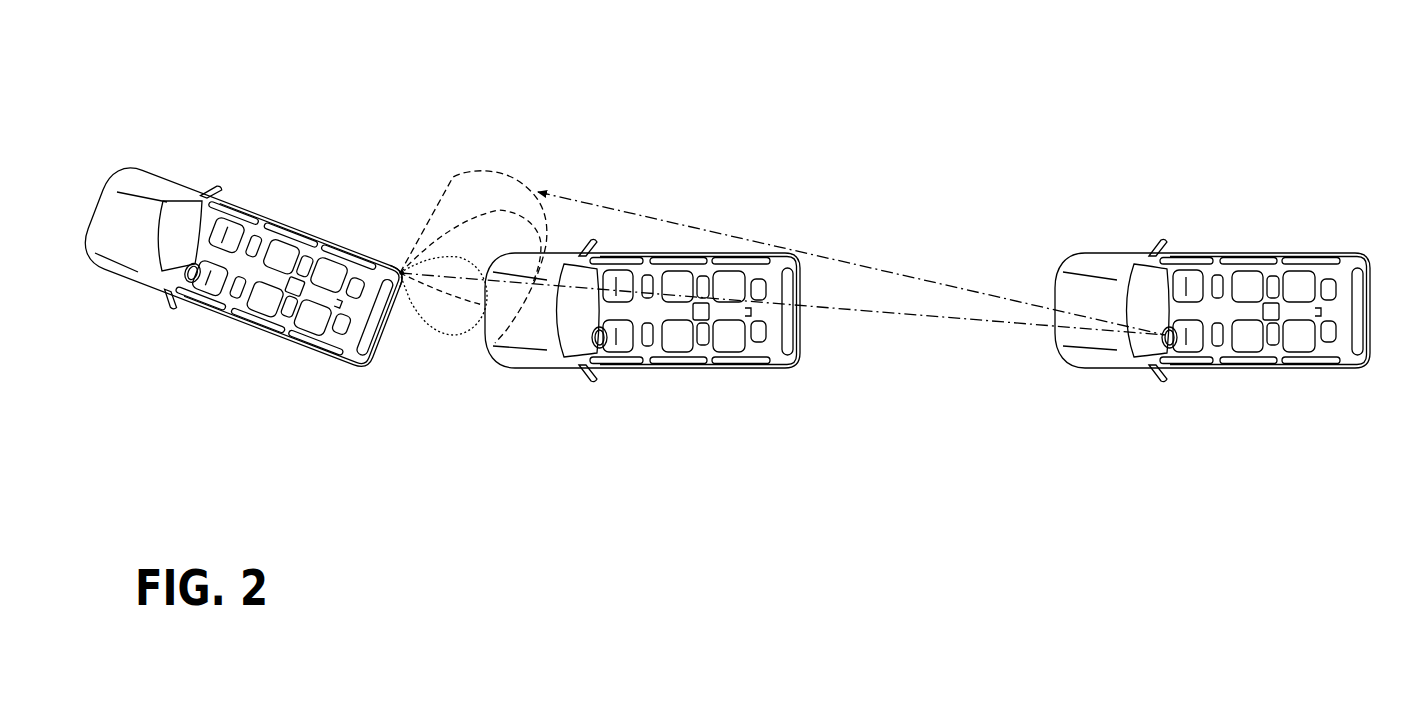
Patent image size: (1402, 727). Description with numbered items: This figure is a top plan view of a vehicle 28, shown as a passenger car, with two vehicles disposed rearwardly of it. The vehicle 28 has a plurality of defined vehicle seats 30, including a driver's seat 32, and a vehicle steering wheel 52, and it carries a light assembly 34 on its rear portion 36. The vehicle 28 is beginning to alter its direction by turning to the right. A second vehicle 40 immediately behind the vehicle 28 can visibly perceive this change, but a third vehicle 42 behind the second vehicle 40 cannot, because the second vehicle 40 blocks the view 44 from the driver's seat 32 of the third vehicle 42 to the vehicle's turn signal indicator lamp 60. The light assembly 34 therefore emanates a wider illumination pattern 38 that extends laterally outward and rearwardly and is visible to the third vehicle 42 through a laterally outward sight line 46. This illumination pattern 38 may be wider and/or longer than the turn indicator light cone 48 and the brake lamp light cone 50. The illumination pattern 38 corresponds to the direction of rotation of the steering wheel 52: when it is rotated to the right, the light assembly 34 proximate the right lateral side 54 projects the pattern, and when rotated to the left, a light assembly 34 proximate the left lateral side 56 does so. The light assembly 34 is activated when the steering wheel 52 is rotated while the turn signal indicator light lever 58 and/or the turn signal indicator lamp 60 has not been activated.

The vehicle 28 is at (148, 170).
The vehicle seats 30 is at (230, 220).
The driver's seat 32 is at (222, 292).
The light assembly 34 is at (404, 278).
The rear portion 36 is at (382, 357).
The illumination pattern 38 is at (453, 176).
The second vehicle 40 is at (544, 373).
The third vehicle 42 is at (1178, 250).
The view 44 is at (845, 308).
The laterally outward sight line 46 is at (840, 260).
The turn indicator light cone 48 is at (467, 295).
The brake lamp light cone 50 is at (483, 305).
The vehicle steering wheel 52 is at (177, 275).
The right lateral side 54 is at (278, 213).
The left lateral side 56 is at (318, 368).
The turn signal indicator light lever 58 is at (188, 266).
The turn signal indicator lamp 60 is at (402, 292).